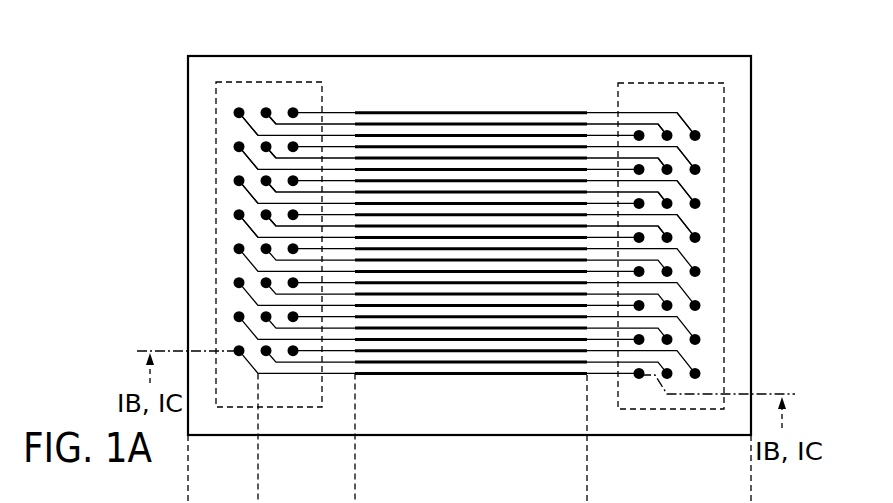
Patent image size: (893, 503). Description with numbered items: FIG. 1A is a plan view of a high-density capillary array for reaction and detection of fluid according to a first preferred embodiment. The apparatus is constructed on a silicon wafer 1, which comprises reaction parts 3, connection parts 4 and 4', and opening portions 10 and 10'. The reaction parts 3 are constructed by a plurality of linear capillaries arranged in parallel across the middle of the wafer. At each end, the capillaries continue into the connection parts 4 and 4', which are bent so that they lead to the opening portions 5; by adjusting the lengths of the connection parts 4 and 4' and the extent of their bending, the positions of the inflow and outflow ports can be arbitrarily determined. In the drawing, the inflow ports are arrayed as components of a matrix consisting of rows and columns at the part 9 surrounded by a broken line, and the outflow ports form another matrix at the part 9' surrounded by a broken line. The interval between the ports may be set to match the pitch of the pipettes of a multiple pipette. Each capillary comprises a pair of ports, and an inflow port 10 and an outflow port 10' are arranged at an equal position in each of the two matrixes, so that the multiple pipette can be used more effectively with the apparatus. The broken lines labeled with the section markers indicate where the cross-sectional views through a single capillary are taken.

The silicon wafer 1 is at (765, 88).
The reaction parts 3 is at (453, 97).
The connection part 4 is at (665, 130).
The connection part 4' is at (294, 149).
The opening portions 5 is at (695, 380).
The part surrounded by a broken line 9 is at (672, 211).
The part surrounded by a broken line 9' is at (269, 208).
The inflow port 10 is at (712, 234).
The outflow port 10' is at (268, 187).